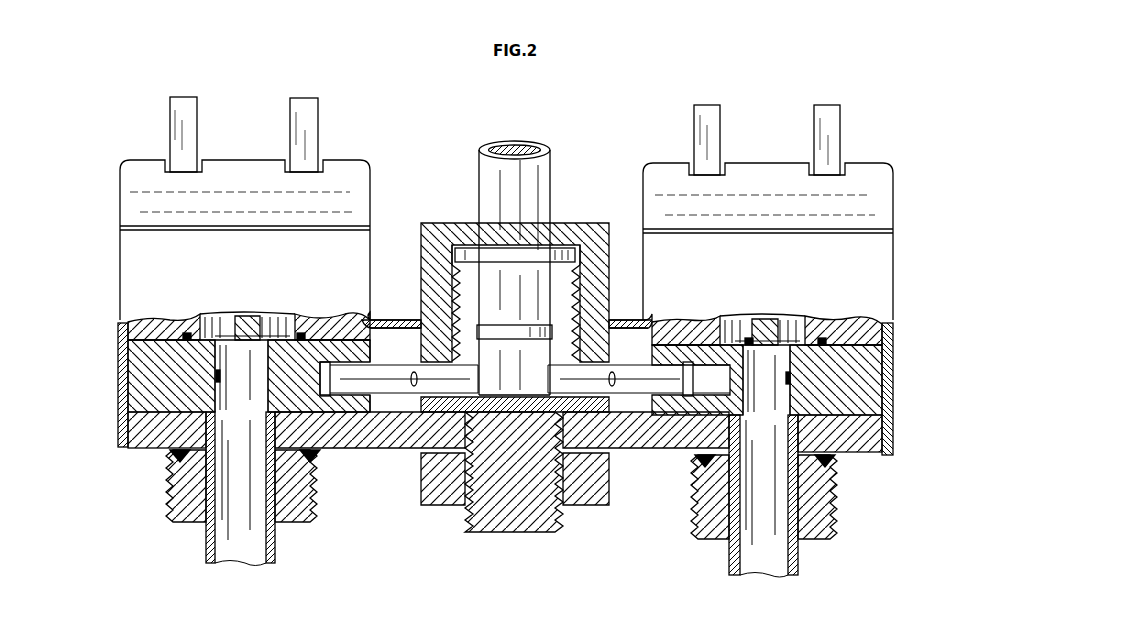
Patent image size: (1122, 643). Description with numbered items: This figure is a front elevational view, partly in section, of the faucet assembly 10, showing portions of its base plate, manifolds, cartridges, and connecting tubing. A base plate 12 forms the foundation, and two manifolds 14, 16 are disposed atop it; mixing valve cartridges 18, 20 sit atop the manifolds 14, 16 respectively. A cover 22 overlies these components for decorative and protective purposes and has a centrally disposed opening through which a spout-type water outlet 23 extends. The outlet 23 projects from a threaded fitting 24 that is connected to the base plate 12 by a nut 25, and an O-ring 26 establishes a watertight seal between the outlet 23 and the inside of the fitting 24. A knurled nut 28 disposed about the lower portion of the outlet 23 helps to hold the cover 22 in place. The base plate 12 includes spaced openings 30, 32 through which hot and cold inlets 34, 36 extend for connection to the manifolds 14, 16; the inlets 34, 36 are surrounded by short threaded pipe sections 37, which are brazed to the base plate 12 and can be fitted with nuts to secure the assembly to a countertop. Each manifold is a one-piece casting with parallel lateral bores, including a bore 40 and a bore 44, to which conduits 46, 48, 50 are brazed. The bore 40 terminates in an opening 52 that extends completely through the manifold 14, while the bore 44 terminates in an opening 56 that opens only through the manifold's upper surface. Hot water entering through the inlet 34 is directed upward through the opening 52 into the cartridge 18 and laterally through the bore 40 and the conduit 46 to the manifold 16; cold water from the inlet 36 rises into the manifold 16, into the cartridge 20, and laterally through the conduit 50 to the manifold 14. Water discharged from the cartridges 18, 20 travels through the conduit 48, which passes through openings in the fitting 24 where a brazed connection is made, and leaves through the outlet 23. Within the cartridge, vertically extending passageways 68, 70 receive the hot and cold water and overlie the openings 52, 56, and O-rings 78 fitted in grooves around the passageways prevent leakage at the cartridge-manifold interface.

The faucet assembly 10 is at (636, 69).
The base plate 12 is at (396, 444).
The manifold 14 is at (128, 376).
The manifold 16 is at (875, 378).
The mixing valve cartridge 18 is at (128, 326).
The mixing valve cartridge 20 is at (880, 338).
The cover 22 is at (365, 172).
The spout-type water outlet 23 is at (535, 176).
The threaded fitting 24 is at (540, 520).
The nut 25 is at (600, 498).
The O-ring 26 is at (515, 330).
The knurled nut 28 is at (590, 226).
The opening 30 is at (276, 440).
The opening 32 is at (742, 438).
The hot inlet 34 is at (275, 552).
The cold inlet 36 is at (730, 560).
The threaded pipe section 37 is at (312, 506).
The bore 40 is at (266, 384).
The bore 44 is at (752, 372).
The conduit 46 is at (399, 379).
The conduit 48 is at (418, 374).
The conduit 50 is at (639, 379).
The opening 52 is at (216, 382).
The opening 56 is at (790, 378).
The passageway 68 is at (200, 316).
The passageway 70 is at (726, 318).
The O-ring 78 is at (185, 333).